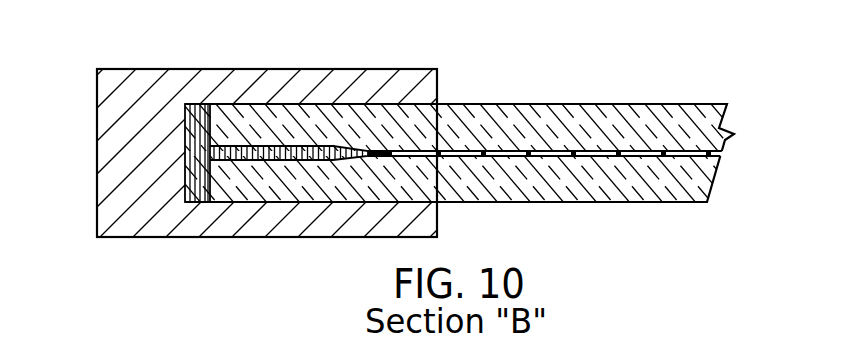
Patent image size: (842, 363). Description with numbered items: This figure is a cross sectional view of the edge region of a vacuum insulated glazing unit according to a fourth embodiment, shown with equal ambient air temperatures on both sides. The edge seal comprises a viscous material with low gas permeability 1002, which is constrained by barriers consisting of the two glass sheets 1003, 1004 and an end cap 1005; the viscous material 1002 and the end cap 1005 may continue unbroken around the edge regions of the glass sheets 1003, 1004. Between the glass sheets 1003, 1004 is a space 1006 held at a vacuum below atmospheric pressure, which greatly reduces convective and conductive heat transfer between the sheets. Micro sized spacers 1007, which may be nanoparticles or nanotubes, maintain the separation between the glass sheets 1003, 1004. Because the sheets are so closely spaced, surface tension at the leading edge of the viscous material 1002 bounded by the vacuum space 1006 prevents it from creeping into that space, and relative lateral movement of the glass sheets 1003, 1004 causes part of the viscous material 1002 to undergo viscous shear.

The viscous material with low gas permeability 1002 is at (259, 146).
The glass sheet 1003 is at (566, 203).
The glass sheet 1004 is at (650, 104).
The end cap 1005 is at (190, 68).
The space 1006 is at (462, 151).
The micro sized spacers 1007 is at (577, 150).